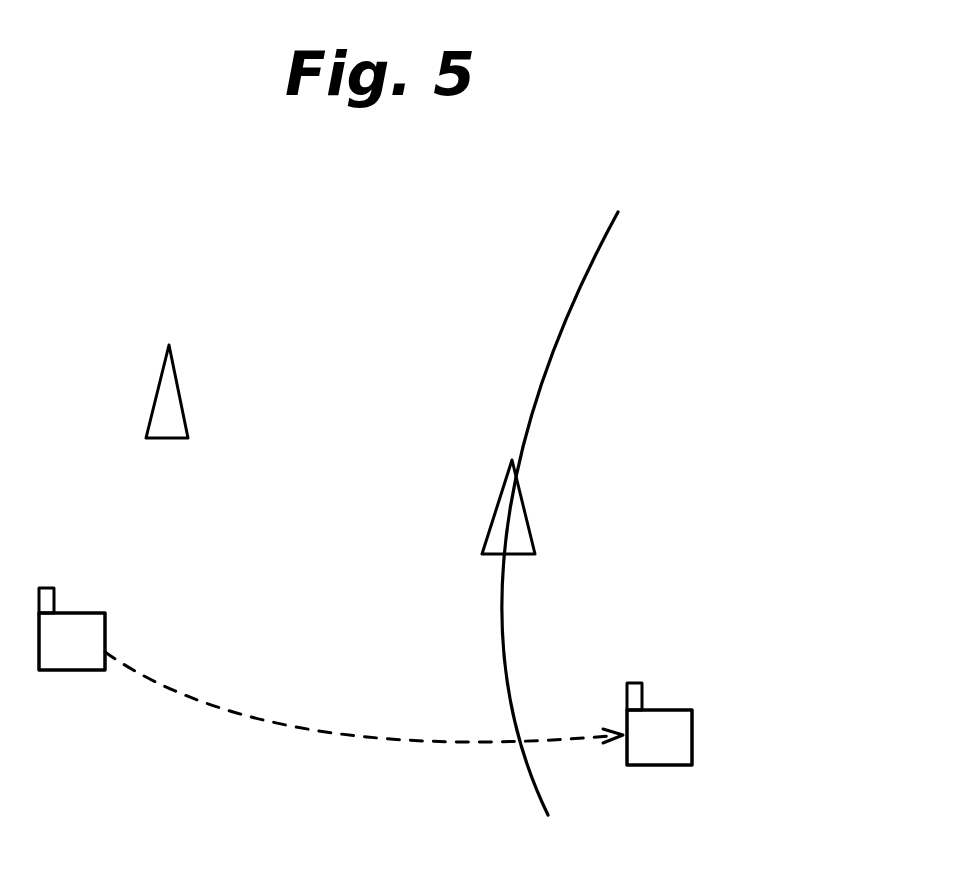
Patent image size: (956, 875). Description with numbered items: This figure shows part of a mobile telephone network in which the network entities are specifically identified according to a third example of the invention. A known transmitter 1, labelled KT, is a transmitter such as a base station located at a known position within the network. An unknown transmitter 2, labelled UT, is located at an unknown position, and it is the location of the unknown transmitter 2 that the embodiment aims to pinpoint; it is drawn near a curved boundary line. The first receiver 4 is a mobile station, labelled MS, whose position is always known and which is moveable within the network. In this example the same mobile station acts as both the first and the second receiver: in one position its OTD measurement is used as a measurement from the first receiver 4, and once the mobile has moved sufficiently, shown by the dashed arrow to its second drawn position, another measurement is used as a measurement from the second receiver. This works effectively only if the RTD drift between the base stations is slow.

The known transmitter 1 is at (155, 398).
The unknown transmitter 2 is at (528, 518).
The first receiver 4 is at (70, 670).